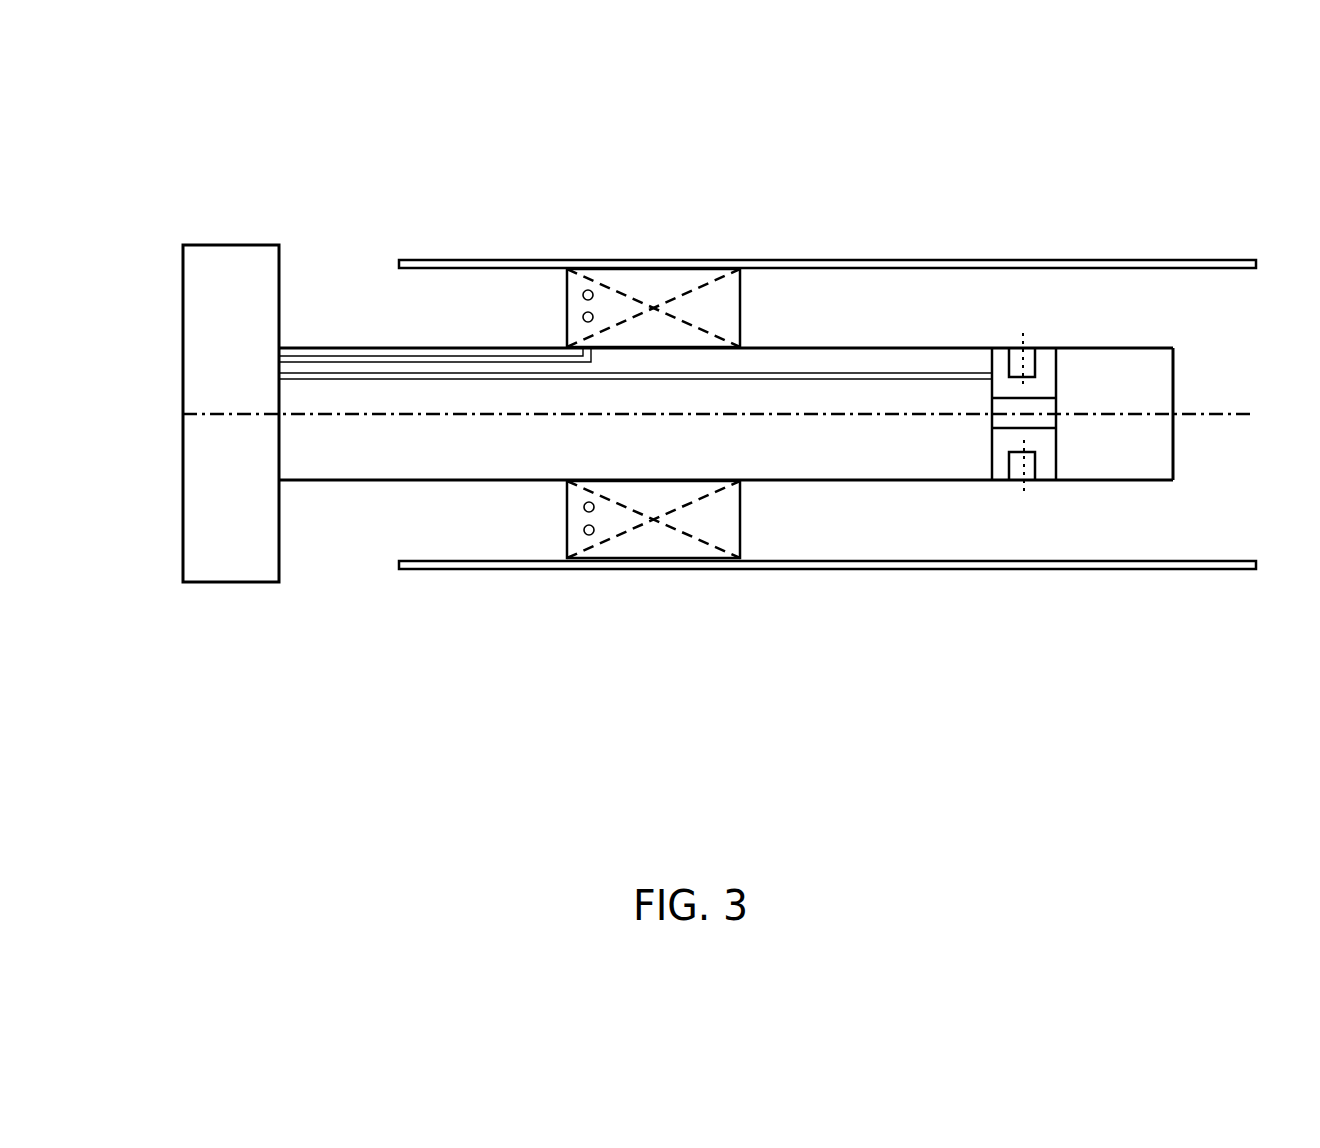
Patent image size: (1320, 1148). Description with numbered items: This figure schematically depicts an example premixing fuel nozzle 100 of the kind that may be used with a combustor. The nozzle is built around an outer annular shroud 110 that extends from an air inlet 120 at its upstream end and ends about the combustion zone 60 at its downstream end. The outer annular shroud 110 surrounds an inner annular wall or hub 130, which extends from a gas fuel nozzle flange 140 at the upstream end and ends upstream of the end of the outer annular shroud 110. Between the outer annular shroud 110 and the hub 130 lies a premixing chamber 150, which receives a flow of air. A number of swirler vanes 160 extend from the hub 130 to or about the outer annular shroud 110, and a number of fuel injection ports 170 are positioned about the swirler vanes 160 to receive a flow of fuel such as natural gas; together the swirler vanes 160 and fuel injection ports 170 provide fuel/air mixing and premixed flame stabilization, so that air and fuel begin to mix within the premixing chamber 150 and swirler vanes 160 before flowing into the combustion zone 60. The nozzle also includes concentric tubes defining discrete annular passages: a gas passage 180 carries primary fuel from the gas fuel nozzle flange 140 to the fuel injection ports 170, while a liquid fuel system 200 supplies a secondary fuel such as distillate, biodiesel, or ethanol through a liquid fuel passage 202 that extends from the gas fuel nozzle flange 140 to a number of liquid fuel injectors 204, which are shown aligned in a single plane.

The combustion zone 60 is at (1259, 455).
The premixing fuel nozzle 100 is at (1065, 136).
The outer annular shroud 110 is at (807, 260).
The air inlet 120 is at (340, 238).
The hub 130 is at (1127, 480).
The gas fuel nozzle flange 140 is at (212, 583).
The premixing chamber 150 is at (900, 311).
The swirler vanes 160 is at (741, 518).
The fuel injection ports 170 is at (584, 506).
The gas passage 180 is at (398, 356).
The liquid fuel system 200 is at (1050, 326).
The liquid fuel passage 202 is at (795, 379).
The liquid fuel injectors 204 is at (1012, 347).